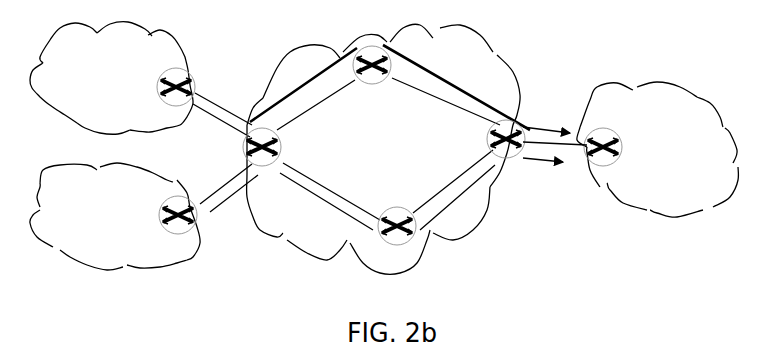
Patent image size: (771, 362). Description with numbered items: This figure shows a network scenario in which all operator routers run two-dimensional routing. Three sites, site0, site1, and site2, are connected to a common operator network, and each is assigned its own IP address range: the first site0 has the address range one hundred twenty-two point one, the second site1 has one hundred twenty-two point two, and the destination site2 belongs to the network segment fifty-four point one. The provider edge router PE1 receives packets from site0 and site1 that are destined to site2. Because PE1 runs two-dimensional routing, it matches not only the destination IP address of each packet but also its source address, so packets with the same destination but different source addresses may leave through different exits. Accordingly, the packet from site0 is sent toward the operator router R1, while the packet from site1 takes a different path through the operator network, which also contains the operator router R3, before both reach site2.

The provider edge router PE1 is at (262, 161).
The operator router R1 is at (372, 80).
The operator router R3 is at (397, 240).
The site site0 is at (112, 79).
The site site1 is at (115, 227).
The site site2 is at (658, 161).